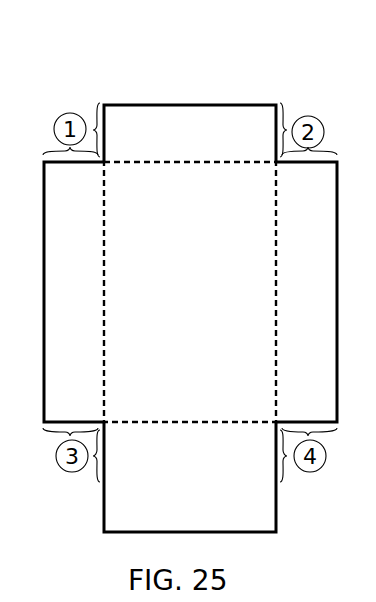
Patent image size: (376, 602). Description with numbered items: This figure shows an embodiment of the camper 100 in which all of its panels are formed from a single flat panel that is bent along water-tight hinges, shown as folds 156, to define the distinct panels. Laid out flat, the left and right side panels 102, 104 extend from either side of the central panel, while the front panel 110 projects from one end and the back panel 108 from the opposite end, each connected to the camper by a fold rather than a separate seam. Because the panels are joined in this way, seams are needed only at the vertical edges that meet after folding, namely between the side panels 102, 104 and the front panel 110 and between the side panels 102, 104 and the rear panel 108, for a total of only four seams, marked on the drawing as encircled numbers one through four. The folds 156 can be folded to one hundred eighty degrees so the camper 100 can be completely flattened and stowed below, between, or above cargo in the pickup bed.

The camper 100 is at (76, 84).
The left side panel 102 is at (97, 225).
The right side panel 104 is at (330, 209).
The back panel 108 is at (108, 492).
The front panel 110 is at (221, 115).
The folds 156 is at (236, 419).